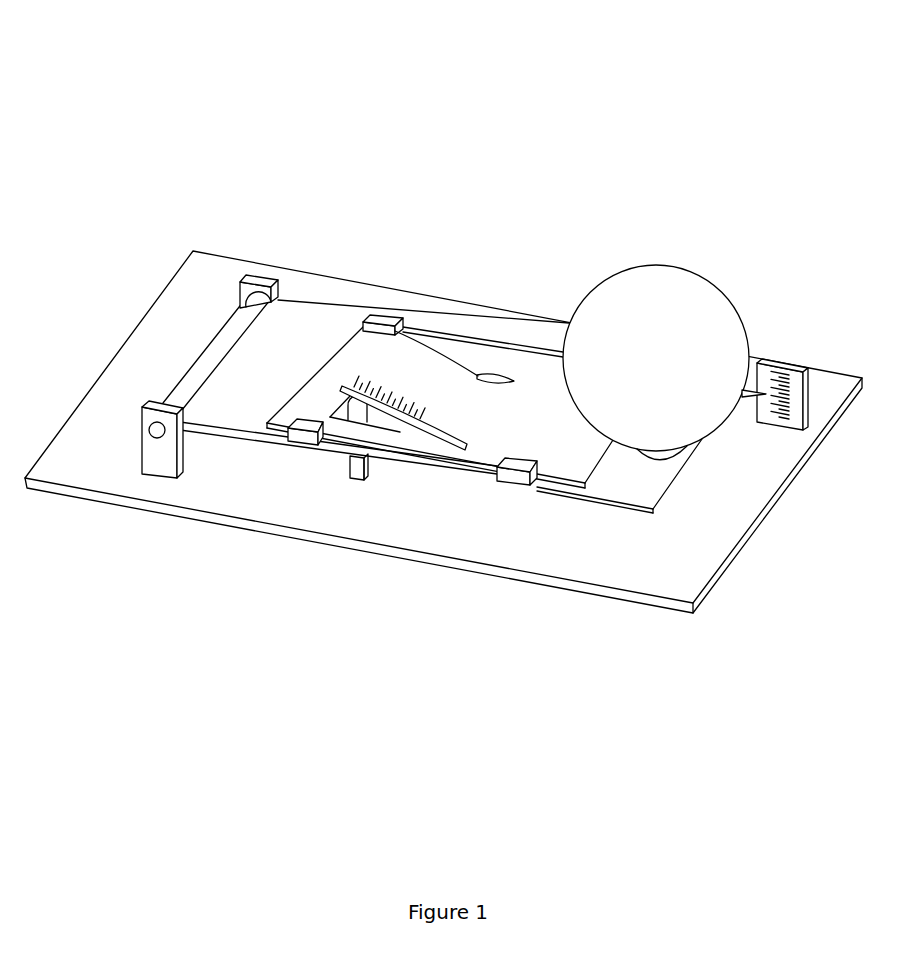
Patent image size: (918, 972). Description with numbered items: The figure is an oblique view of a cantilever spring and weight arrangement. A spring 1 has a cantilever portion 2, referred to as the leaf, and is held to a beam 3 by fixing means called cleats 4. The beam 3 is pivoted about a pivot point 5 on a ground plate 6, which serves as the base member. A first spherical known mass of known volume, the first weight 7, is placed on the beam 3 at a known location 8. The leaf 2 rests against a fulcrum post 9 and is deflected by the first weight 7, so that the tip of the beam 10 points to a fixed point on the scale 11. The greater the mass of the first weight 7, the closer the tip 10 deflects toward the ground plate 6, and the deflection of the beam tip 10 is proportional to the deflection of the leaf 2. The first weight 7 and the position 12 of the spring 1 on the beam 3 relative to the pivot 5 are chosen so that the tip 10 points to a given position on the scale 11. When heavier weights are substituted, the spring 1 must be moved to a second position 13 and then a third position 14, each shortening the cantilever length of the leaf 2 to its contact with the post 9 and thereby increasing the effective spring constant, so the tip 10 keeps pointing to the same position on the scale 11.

The spring 1 is at (565, 470).
The cantilever portion 2 is at (410, 362).
The beam 3 is at (635, 493).
The cleats 4 is at (303, 436).
The pivot point 5 is at (157, 430).
The ground plate 6 is at (202, 495).
The first weight 7 is at (610, 300).
The known location 8 is at (685, 460).
The post 9 is at (357, 473).
The tip of the beam 10 is at (766, 395).
The scale 11 is at (792, 383).
The position 12 is at (368, 358).
The second position 13 is at (395, 380).
The third position 14 is at (427, 397).